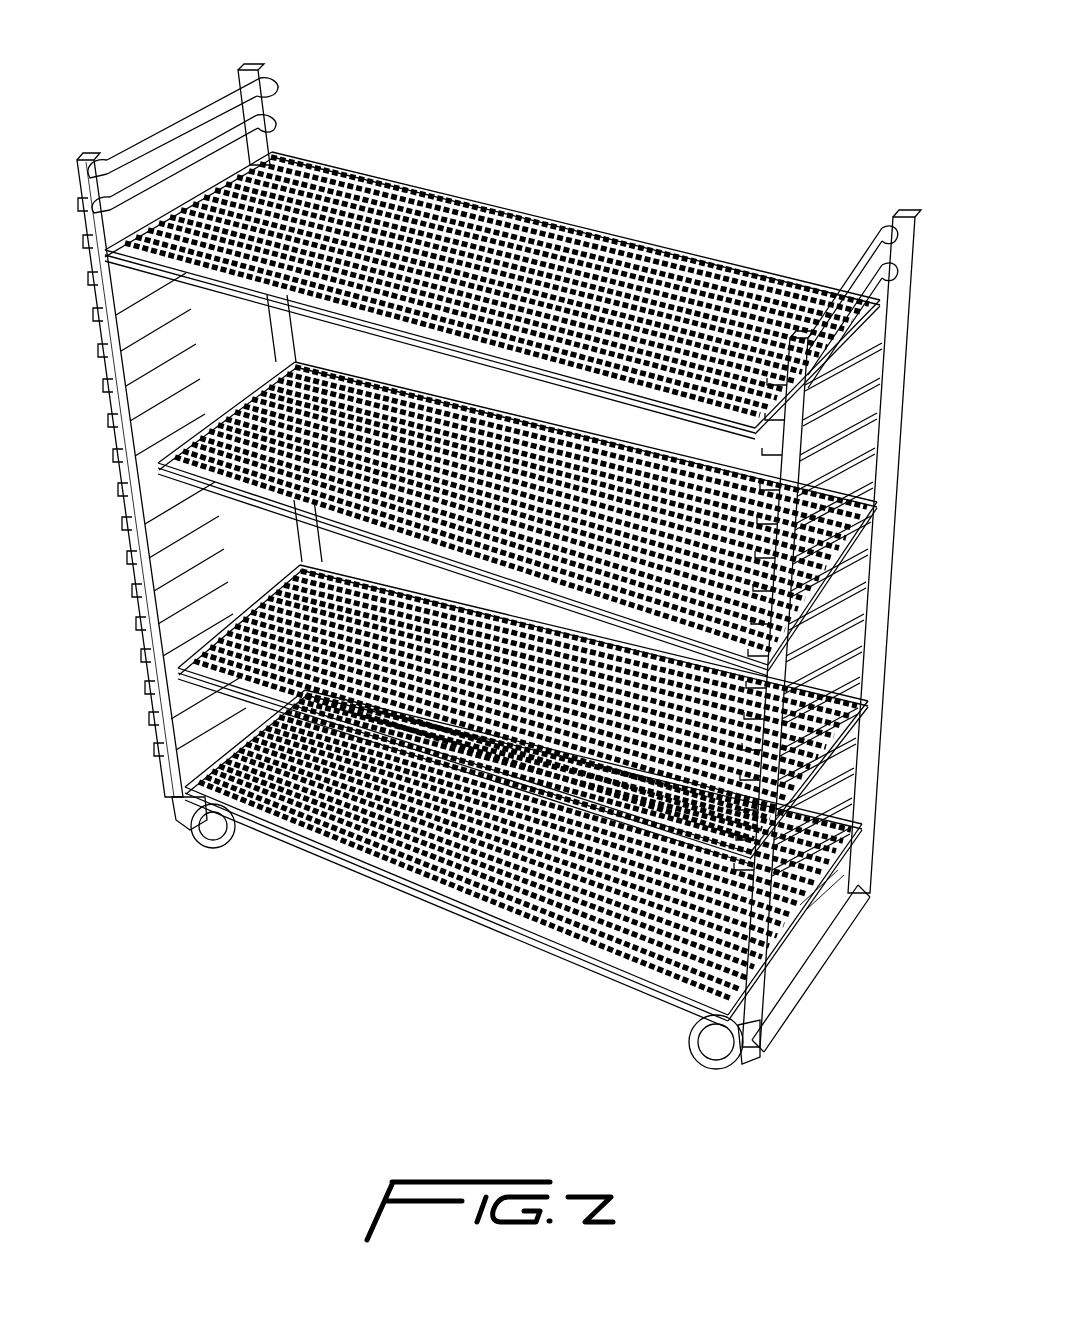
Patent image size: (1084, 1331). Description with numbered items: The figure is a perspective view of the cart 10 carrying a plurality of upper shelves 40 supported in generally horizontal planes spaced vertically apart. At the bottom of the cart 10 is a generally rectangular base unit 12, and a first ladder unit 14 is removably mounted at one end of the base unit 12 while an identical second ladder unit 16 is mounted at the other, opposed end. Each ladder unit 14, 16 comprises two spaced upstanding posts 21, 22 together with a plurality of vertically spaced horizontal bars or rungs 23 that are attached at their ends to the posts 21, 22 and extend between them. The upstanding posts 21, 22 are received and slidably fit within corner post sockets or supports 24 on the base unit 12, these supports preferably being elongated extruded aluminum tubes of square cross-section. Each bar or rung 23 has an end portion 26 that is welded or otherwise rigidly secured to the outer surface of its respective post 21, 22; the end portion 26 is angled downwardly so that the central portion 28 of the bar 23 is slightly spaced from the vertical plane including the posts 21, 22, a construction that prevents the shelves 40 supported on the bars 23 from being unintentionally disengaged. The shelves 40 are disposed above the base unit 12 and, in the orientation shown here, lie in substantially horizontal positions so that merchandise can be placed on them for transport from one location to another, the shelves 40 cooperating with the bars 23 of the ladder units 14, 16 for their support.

The cart 10 is at (745, 122).
The base unit 12 is at (800, 975).
The first ladder unit 14 is at (265, 138).
The second ladder unit 16 is at (906, 386).
The upstanding post 21 is at (103, 165).
The upstanding post 22 is at (262, 68).
The horizontal bar or rung 23 is at (843, 456).
The corner post socket or support 24 is at (168, 799).
The end portion 26 is at (275, 82).
The central portion 28 is at (185, 133).
The shelf 40 is at (540, 216).